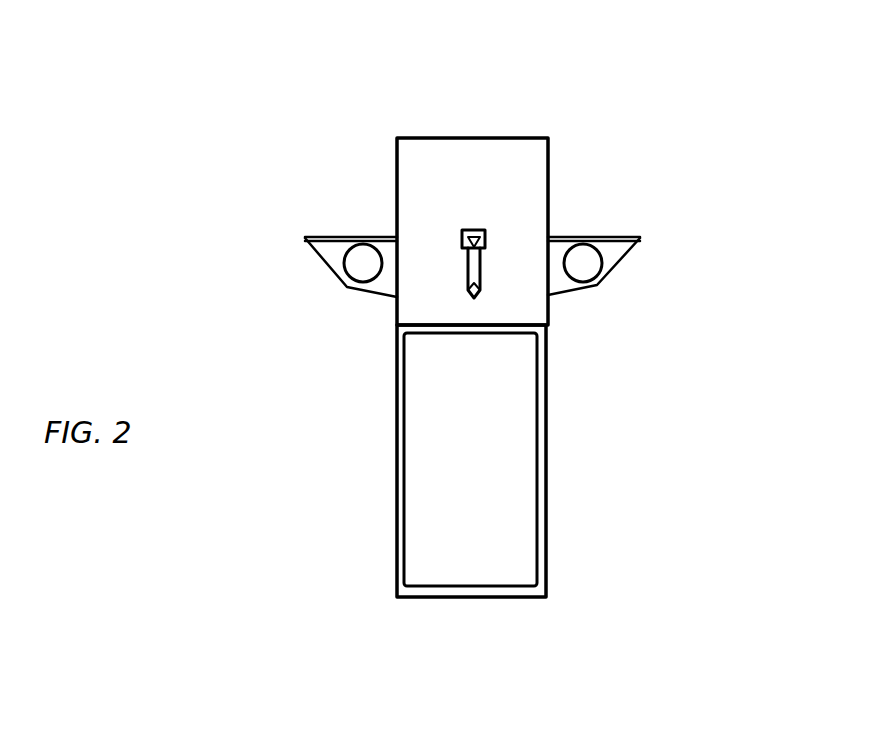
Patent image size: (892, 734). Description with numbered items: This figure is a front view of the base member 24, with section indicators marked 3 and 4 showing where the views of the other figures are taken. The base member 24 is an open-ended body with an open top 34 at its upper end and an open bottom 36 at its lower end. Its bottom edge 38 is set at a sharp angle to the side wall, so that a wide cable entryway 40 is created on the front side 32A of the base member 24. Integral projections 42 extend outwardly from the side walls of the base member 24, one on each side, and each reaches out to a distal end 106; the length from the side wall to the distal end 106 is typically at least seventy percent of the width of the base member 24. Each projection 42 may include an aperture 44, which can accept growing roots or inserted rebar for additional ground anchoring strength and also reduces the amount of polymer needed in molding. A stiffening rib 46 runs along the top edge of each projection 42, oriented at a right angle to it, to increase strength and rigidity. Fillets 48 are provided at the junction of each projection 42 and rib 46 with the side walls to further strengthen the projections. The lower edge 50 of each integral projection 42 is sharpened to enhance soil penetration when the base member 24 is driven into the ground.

The base member 24 is at (252, 309).
The front side 32A is at (534, 181).
The open top 34 is at (523, 138).
The open bottom 36 is at (467, 585).
The bottom edge 38 is at (544, 375).
The cable entryway 40 is at (520, 426).
The integral projections 42 is at (623, 258).
The apertures 44 is at (598, 284).
The stiffening ribs 46 is at (355, 237).
The fillets 48 is at (486, 242).
The lower edges 50 is at (392, 298).
The distal ends 106 is at (305, 240).
The section line 3 is at (835, 97).
The section line 4 is at (232, 0).